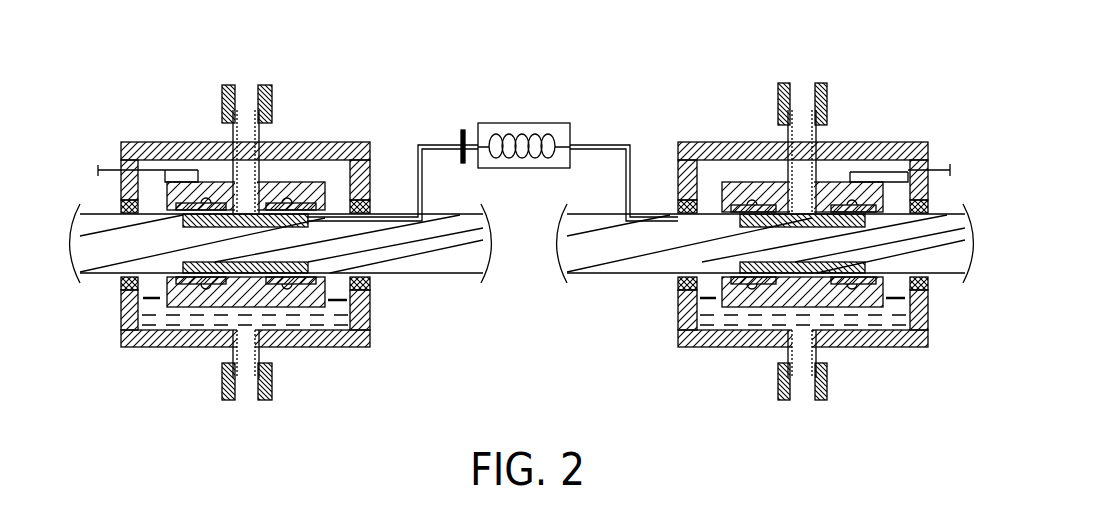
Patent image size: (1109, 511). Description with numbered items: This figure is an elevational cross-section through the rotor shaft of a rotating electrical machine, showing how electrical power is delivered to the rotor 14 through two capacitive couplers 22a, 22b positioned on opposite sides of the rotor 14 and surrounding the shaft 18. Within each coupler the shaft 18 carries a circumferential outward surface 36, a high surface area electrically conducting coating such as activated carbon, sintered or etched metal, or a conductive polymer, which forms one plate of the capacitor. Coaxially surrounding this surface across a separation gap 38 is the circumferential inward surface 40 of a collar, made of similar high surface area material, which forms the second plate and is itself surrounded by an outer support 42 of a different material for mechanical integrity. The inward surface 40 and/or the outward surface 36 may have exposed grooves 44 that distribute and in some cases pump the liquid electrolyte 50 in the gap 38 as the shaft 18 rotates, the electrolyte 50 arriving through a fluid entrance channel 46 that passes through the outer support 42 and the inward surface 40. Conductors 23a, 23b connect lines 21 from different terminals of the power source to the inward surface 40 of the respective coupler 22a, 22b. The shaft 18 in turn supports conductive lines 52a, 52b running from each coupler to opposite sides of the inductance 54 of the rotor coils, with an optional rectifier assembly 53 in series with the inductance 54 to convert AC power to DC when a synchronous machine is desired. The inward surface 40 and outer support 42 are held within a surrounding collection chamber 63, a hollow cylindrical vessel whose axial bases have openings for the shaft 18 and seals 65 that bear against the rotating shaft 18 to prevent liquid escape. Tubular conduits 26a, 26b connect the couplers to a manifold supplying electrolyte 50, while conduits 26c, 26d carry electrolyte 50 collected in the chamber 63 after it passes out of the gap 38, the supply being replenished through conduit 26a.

The rotor 14 is at (511, 115).
The shaft 18 is at (94, 222).
The lines 21 is at (101, 168).
The capacitive coupler 22a is at (371, 113).
The capacitive coupler 22b is at (682, 107).
The conductor 23a is at (188, 171).
The conductor 23b is at (885, 142).
The tubular conduit 26a is at (225, 108).
The tubular conduit 26b is at (823, 111).
The conduit 26c is at (268, 382).
The conduit 26d is at (825, 380).
The circumferential outward surface 36 is at (178, 247).
The separation gap 38 is at (120, 300).
The circumferential inward surface 40 is at (285, 203).
The outer support 42 is at (270, 195).
The grooves 44 is at (285, 285).
The fluid entrance channel 46 is at (243, 141).
The liquid electrolyte 50 is at (243, 93).
The conductive line 52a is at (439, 144).
The conductive line 52b is at (603, 144).
The rectifier assembly 53 is at (463, 130).
The inductance 54 is at (519, 132).
The collection chamber 63 is at (363, 336).
The seals 65 is at (371, 211).